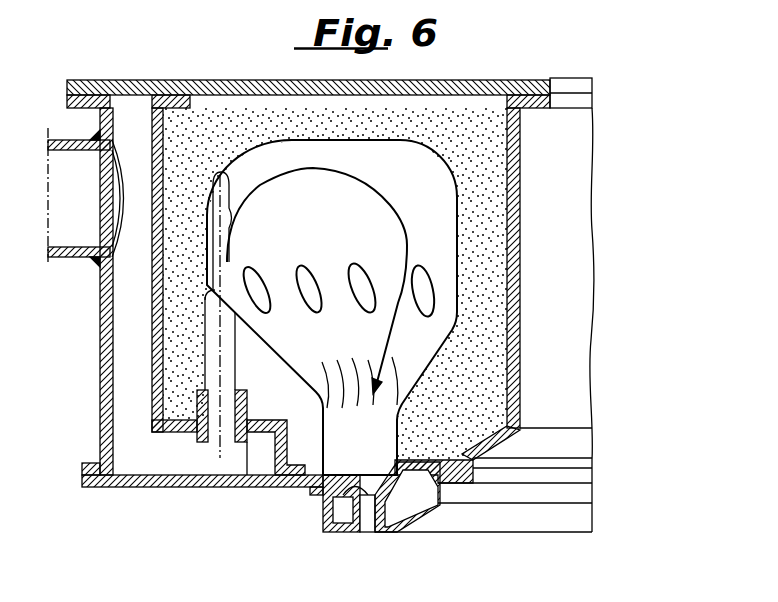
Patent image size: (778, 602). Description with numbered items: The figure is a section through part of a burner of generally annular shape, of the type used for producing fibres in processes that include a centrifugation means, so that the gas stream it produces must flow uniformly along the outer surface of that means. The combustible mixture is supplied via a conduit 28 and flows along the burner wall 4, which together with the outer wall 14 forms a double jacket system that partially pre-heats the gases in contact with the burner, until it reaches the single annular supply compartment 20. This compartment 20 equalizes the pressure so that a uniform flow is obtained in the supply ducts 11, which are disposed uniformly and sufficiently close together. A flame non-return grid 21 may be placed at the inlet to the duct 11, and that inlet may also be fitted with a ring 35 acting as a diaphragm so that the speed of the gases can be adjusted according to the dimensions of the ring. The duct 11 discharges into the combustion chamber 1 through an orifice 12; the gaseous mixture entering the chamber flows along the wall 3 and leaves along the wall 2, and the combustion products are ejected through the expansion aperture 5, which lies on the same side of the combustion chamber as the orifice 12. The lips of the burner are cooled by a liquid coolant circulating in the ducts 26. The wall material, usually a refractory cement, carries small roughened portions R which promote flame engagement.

The combustion chamber 1 is at (331, 249).
The wall 2 is at (491, 249).
The wall 3 is at (198, 180).
The burner wall 4 is at (155, 347).
The expansion aperture 5 is at (323, 495).
The duct 11 is at (225, 338).
The orifice 12 is at (262, 318).
The double jacket system wall 14 is at (100, 390).
The annular supply compartment 20 is at (166, 460).
The flame non-return grid 21 is at (197, 395).
The ducts 26 is at (342, 517).
The conduit 28 is at (68, 250).
The ring 35 is at (247, 475).
The roughened portions R is at (232, 231).